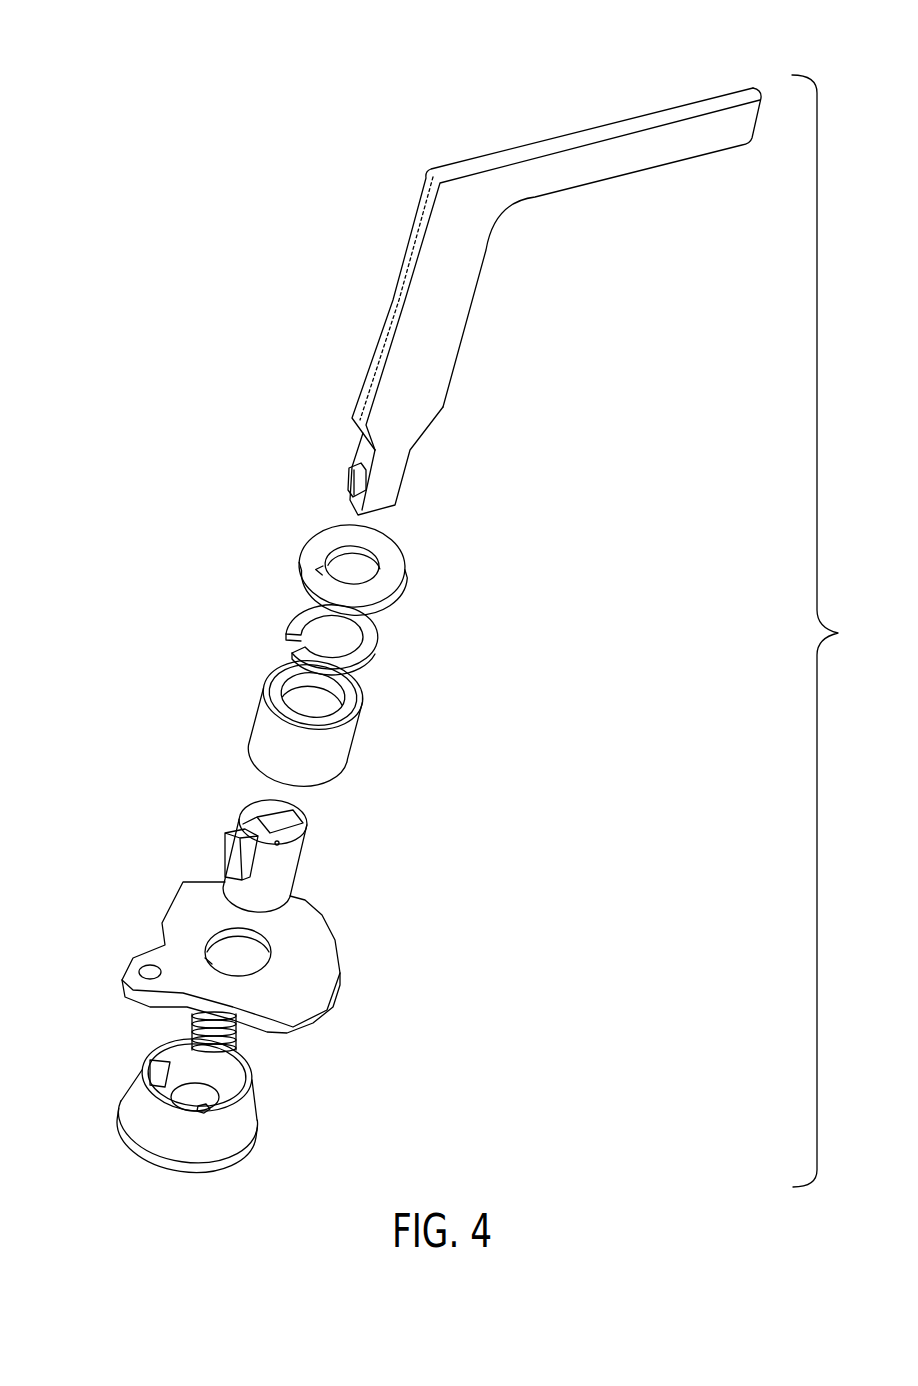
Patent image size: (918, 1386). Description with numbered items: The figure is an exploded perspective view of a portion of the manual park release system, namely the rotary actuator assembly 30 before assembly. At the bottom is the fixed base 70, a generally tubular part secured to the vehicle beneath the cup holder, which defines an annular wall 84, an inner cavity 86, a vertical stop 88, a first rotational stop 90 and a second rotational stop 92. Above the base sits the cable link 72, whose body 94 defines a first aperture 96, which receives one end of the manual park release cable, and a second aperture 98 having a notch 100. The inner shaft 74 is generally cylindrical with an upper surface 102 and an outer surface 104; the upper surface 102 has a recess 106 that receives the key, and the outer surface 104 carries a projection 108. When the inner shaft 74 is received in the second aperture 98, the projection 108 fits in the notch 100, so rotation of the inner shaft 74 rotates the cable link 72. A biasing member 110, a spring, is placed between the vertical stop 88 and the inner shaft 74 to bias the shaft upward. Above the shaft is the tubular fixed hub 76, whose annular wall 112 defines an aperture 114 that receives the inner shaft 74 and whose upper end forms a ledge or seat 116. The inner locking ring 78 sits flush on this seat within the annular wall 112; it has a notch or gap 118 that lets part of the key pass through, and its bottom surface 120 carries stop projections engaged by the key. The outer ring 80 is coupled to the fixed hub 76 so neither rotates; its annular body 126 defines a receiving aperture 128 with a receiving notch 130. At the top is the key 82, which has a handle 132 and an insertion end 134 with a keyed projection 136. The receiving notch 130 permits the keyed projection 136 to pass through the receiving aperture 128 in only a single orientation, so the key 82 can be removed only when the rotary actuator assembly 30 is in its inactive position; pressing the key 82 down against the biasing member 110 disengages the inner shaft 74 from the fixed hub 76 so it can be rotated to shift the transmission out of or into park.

The rotary actuator assembly 30 is at (305, 97).
The key 82 is at (385, 253).
The handle 132 is at (652, 122).
The insertion end 134 is at (409, 477).
The keyed projection 136 is at (348, 482).
The outer ring 80 is at (311, 540).
The annular body 126 is at (383, 552).
The receiving aperture 128 is at (357, 570).
The receiving notch 130 is at (367, 600).
The inner locking ring 78 is at (288, 607).
The notch or gap 118 is at (290, 656).
The bottom surface 120 is at (368, 657).
The fixed hub 76 is at (264, 732).
The aperture 114 is at (305, 697).
The ledge or seat 116 is at (353, 703).
The annular wall 112 is at (335, 758).
The inner shaft 74 is at (224, 845).
The recess 106 is at (289, 816).
The upper surface 102 is at (293, 832).
The outer surface 104 is at (278, 888).
The projection 108 is at (230, 864).
The cable link 72 is at (163, 947).
The second aperture 98 is at (246, 956).
The body 94 is at (303, 968).
The first aperture 96 is at (148, 970).
The notch 100 is at (207, 961).
The biasing member 110 is at (242, 1037).
The fixed base 70 is at (113, 1141).
The second rotational stop 92 is at (150, 1061).
The inner cavity 86 is at (226, 1080).
The annular wall 84 is at (238, 1128).
The vertical stop 88 is at (187, 1097).
The first rotational stop 90 is at (213, 1107).